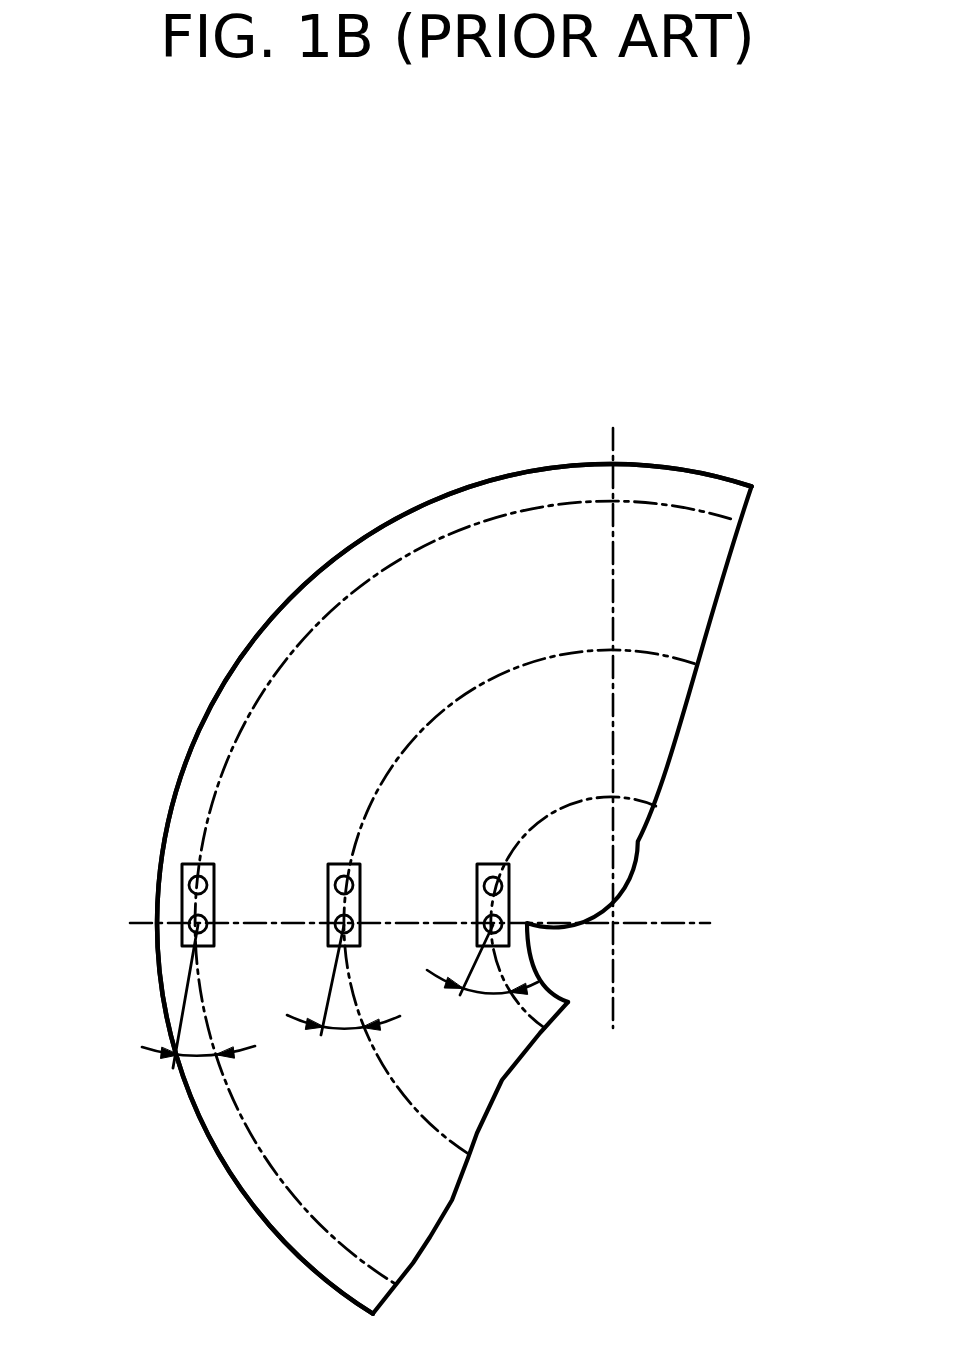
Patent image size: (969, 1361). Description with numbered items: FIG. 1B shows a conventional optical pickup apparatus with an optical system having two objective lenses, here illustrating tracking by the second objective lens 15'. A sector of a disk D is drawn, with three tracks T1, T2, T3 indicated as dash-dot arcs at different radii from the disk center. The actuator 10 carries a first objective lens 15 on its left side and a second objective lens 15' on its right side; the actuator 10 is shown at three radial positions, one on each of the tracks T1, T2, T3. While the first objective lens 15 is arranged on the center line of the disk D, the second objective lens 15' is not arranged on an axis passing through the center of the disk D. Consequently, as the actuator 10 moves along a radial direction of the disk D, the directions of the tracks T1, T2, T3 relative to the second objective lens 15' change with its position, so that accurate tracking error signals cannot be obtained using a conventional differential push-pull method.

The actuator 10 is at (188, 942).
The first objective lens 15 is at (289, 905).
The second objective lens 15' is at (289, 852).
The disk D is at (326, 581).
The track T1 is at (353, 1250).
The track T2 is at (428, 1127).
The track T3 is at (517, 1002).